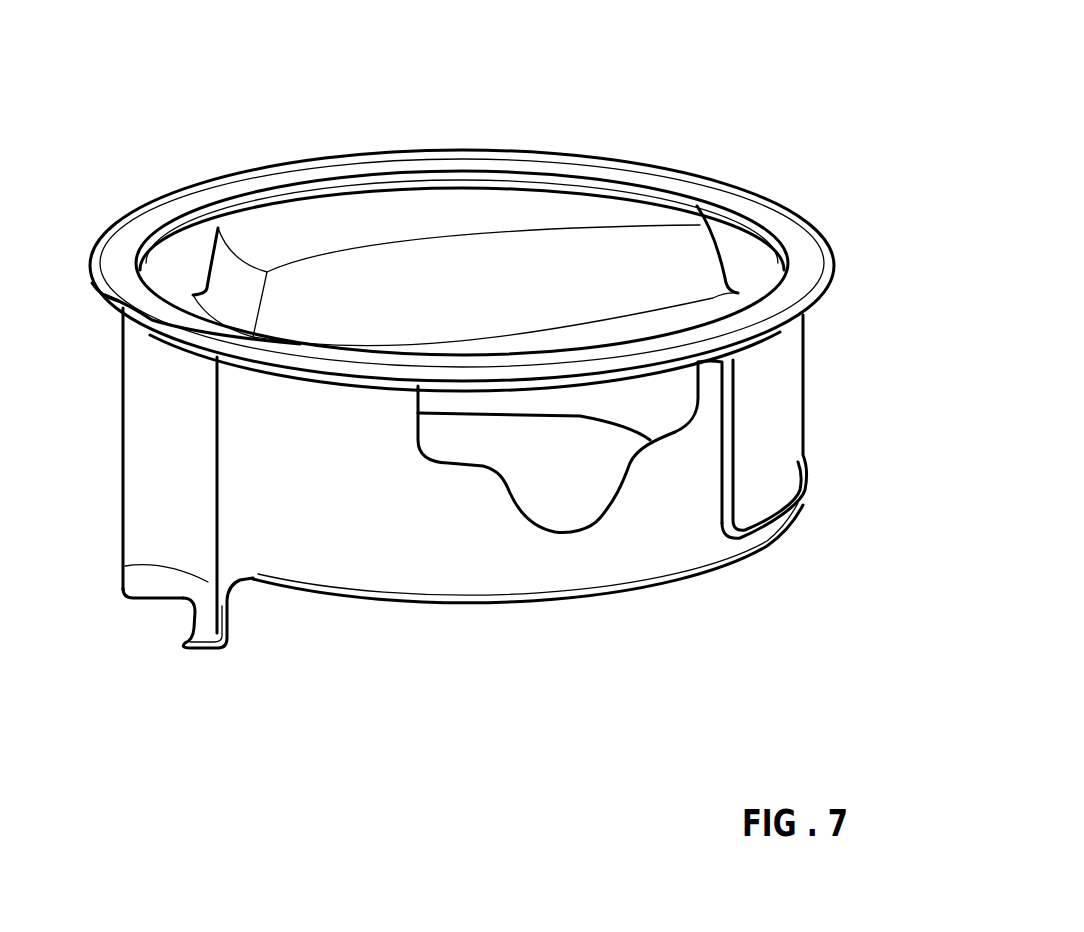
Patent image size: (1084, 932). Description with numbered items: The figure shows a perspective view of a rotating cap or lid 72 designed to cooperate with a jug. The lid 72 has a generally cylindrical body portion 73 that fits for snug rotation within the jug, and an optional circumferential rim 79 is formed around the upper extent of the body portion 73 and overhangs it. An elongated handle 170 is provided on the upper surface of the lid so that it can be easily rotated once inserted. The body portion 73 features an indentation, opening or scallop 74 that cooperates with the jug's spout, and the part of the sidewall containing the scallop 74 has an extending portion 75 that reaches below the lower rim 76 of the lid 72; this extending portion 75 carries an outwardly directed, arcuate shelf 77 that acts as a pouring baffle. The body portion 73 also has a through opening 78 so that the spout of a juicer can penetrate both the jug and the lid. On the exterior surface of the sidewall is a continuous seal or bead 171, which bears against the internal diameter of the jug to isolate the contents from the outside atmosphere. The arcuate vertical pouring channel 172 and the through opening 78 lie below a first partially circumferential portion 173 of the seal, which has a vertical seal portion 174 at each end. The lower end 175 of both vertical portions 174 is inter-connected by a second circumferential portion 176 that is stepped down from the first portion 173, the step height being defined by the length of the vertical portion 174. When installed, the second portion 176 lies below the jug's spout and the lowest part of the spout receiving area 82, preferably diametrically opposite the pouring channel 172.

The lid 72 is at (757, 136).
The body portion 73 is at (710, 540).
The scallop 74 is at (220, 508).
The extending portion 75 is at (240, 636).
The lower rim 76 is at (345, 597).
The arcuate shelf 77 is at (140, 600).
The through opening 78 is at (577, 543).
The circumferential rim 79 is at (808, 238).
The spout receiving area 82 is at (565, 503).
The elongated handle 170 is at (528, 212).
The continuous seal 171 is at (744, 433).
The arcuate vertical pouring channel 172 is at (162, 407).
The first partially circumferential portion of the seal 173 is at (266, 375).
The vertical seal portion 174 is at (733, 395).
The lower end 175 is at (717, 507).
The second circumferential portion of the seal 176 is at (800, 488).